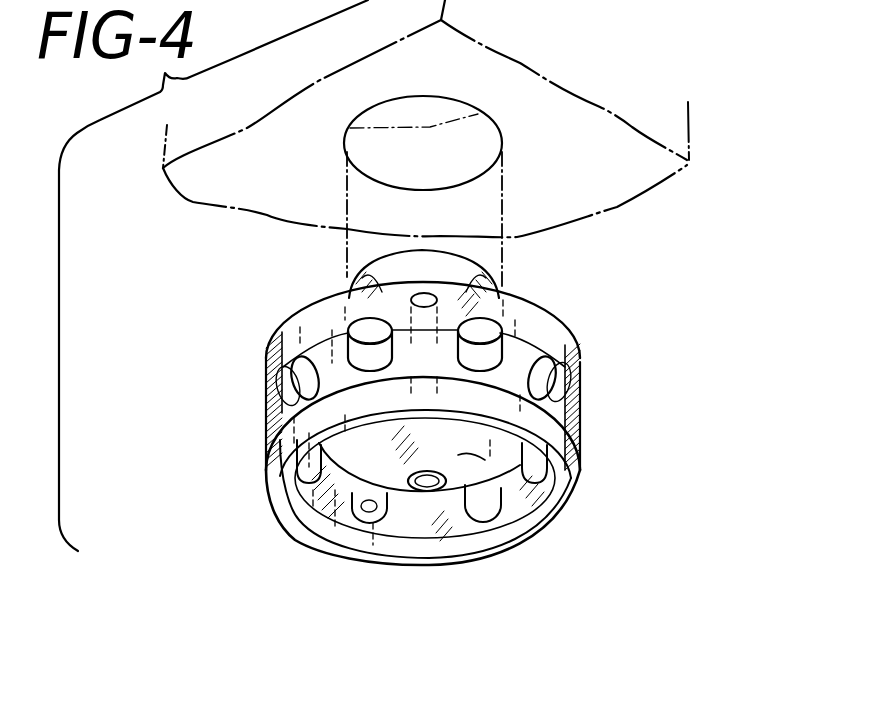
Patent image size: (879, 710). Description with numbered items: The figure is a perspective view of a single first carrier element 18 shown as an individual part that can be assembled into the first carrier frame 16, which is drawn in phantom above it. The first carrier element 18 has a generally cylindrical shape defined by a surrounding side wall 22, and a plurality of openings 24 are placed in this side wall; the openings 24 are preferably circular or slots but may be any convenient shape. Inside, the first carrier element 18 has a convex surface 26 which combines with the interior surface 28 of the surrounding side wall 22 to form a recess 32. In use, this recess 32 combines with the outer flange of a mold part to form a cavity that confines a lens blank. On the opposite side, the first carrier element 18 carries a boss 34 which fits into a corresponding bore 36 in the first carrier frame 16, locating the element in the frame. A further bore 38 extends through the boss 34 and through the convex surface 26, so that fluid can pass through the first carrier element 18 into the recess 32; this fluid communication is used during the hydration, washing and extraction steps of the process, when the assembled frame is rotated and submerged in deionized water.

The first carrier frame 16 is at (677, 132).
The first carrier element 18 is at (469, 443).
The surrounding side wall 22 is at (578, 423).
The openings 24 is at (292, 363).
The convex surface 26 is at (467, 457).
The interior surface 28 is at (450, 540).
The recess 32 is at (390, 522).
The boss 34 is at (353, 273).
The bore 36 is at (480, 133).
The bore 38 is at (427, 490).